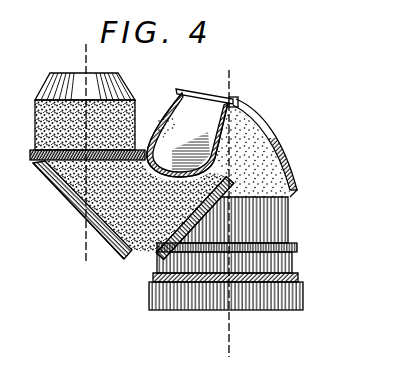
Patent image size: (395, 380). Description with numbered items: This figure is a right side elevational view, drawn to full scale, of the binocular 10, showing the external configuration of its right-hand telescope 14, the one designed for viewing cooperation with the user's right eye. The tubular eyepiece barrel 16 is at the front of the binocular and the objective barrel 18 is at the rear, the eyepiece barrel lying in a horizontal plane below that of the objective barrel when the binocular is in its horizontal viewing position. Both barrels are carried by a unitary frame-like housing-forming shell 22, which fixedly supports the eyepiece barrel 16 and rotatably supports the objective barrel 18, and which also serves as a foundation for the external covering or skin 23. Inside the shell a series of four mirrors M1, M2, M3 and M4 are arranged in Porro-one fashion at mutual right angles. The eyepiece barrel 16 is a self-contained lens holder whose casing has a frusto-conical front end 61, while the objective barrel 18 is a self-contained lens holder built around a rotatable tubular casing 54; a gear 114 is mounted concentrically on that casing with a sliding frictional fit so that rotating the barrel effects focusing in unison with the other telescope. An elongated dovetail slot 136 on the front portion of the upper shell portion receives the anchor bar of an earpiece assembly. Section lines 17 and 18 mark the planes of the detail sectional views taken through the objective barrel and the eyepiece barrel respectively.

The binocular 10 is at (292, 104).
The telescope 14 is at (229, 236).
The eyepiece barrel 16 is at (36, 122).
The section line 17- 17 is at (208, 73).
The objective barrel 18 is at (68, 47).
The housing-forming shell 22 is at (305, 193).
The external covering or skin 23 is at (58, 188).
The tubular casing 54 is at (222, 278).
The frusto-conical front end 61 is at (45, 88).
The gear 114 is at (296, 249).
The dovetail slot 136 is at (236, 98).
The mirror M1 is at (274, 140).
The mirror M2 is at (191, 110).
The mirror M3 is at (155, 258).
The mirror M4 is at (75, 218).